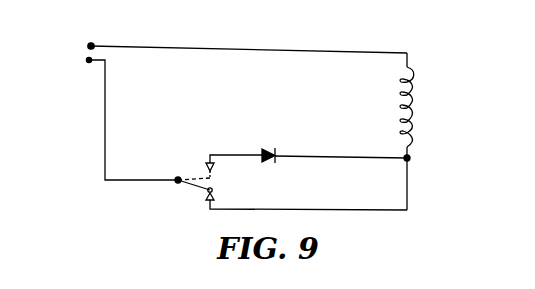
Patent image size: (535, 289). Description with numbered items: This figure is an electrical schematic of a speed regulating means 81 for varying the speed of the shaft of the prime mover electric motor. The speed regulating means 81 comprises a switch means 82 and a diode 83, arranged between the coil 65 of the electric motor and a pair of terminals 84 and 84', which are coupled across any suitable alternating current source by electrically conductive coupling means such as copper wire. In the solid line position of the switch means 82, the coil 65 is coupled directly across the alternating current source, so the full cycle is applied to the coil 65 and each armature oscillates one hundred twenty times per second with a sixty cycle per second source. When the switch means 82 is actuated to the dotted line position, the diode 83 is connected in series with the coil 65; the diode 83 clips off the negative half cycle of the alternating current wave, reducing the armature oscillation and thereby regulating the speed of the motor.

The speed regulating means 81 is at (73, 186).
The switch means 82 is at (192, 188).
The diode 83 is at (265, 152).
The terminal 84 is at (91, 34).
The terminal 84' is at (78, 59).
The coil 65 is at (417, 103).